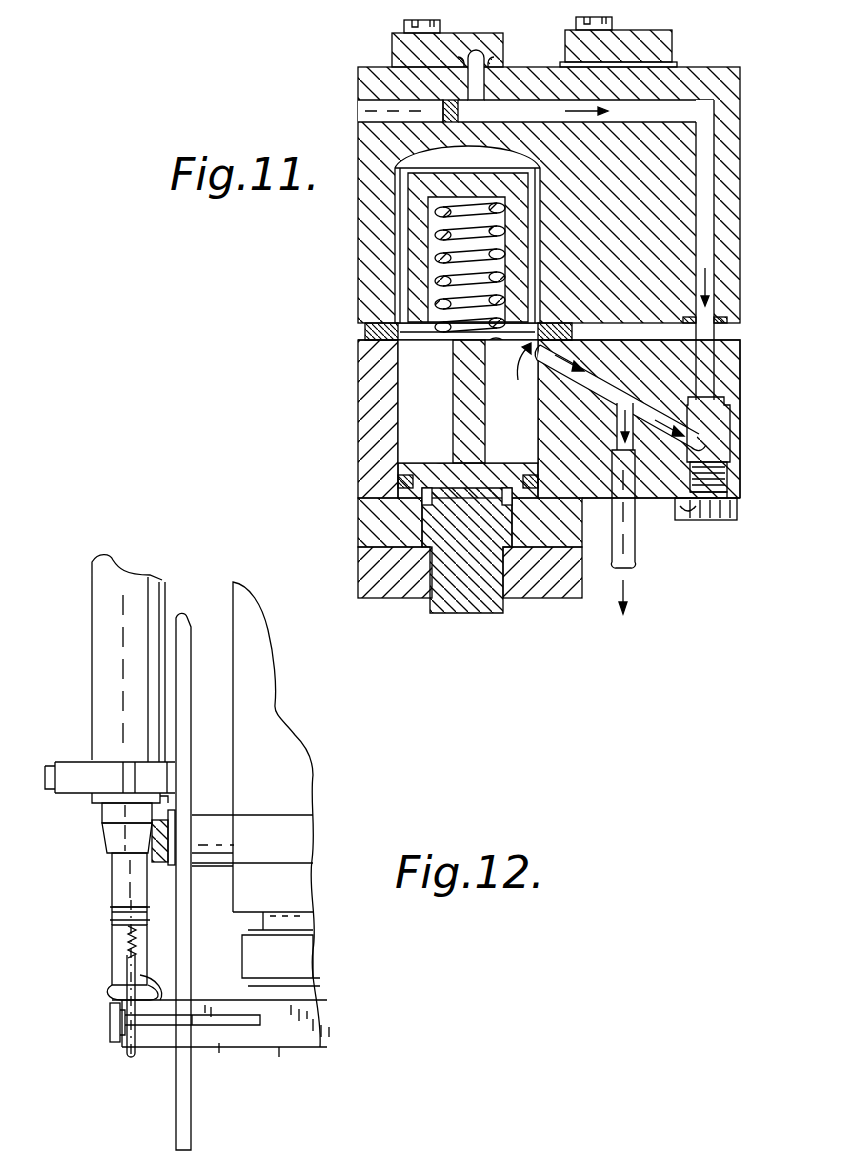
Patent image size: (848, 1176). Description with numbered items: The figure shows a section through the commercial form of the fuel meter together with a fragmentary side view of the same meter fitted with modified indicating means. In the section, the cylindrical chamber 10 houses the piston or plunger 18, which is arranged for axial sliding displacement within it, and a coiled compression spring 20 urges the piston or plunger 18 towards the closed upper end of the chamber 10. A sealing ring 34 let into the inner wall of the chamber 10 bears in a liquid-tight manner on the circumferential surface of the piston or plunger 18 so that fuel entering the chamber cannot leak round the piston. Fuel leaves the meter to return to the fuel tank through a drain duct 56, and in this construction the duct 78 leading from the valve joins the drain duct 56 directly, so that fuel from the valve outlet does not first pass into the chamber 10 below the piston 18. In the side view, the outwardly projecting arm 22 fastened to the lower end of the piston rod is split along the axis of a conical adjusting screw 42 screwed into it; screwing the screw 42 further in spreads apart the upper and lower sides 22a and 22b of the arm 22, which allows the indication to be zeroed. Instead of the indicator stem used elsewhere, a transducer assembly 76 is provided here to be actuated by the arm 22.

In FIG. 11, the cylindrical chamber 10 is at (398, 211).
In FIG. 11, the piston or plunger 18 is at (412, 246).
In FIG. 11, the coiled compression spring 20 is at (432, 276).
In FIG. 11, the sealing ring 34 is at (395, 313).
In FIG. 11, the drain duct 56 is at (627, 400).
In FIG. 11, the duct 78 is at (712, 222).
In FIG. 12, the transducer assembly 76 is at (106, 952).
In FIG. 12, the upper side of the arm 22a is at (160, 1000).
In FIG. 12, the lower side of the arm 22b is at (155, 1045).
In FIG. 12, the conical adjusting screw 42 is at (108, 1027).
In FIG. 12, the outwardly projecting arm 22 is at (262, 1042).